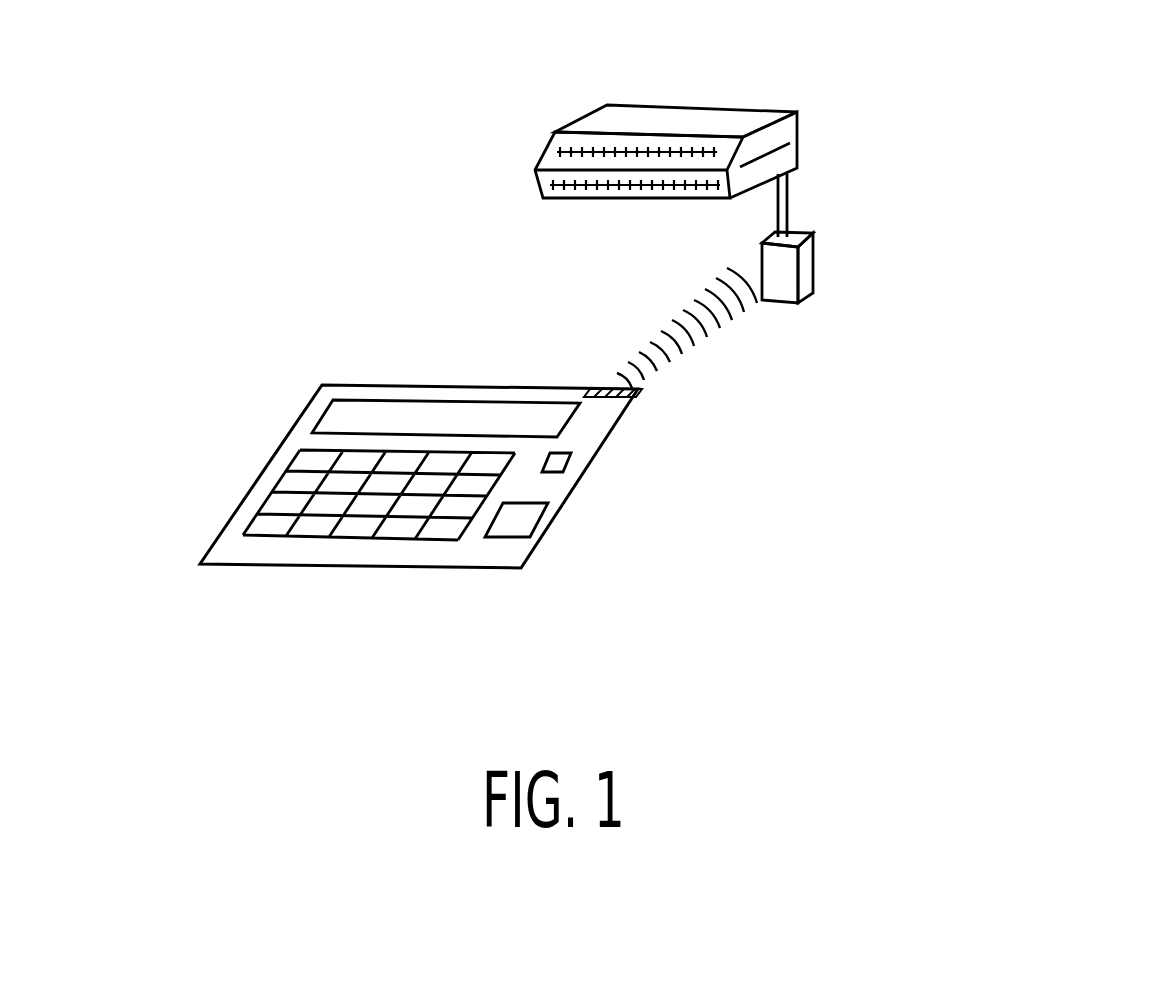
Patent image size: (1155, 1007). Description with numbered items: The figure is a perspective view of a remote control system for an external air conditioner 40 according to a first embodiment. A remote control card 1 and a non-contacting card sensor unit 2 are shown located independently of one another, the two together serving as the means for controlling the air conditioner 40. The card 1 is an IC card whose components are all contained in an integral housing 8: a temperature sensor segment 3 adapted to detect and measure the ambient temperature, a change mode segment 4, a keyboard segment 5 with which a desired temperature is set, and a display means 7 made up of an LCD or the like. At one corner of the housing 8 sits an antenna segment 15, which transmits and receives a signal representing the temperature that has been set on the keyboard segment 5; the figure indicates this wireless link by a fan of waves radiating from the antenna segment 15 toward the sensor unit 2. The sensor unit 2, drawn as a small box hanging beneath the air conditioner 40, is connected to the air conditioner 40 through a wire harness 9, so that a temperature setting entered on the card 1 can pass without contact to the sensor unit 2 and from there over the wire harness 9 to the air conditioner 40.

The remote control card 1 is at (300, 388).
The non-contacting card sensor unit 2 is at (815, 262).
The temperature sensor segment 3 is at (530, 524).
The change mode segment 4 is at (571, 462).
The keyboard segment 5 is at (330, 527).
The display means 7 is at (365, 410).
The integral housing 8 is at (265, 462).
The wire harness 9 is at (790, 190).
The antenna segment 15 is at (640, 390).
The air conditioner 40 is at (747, 105).